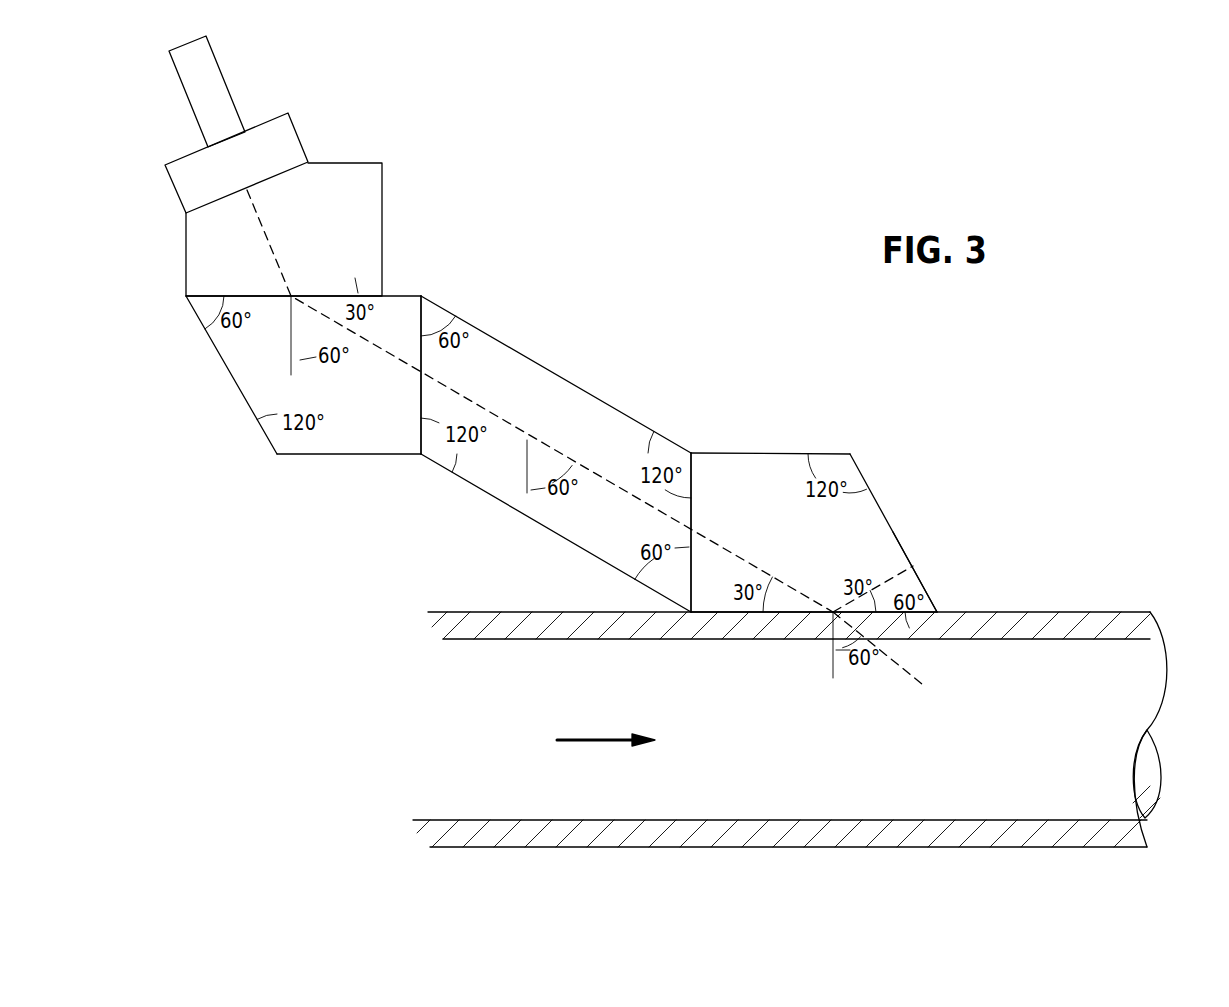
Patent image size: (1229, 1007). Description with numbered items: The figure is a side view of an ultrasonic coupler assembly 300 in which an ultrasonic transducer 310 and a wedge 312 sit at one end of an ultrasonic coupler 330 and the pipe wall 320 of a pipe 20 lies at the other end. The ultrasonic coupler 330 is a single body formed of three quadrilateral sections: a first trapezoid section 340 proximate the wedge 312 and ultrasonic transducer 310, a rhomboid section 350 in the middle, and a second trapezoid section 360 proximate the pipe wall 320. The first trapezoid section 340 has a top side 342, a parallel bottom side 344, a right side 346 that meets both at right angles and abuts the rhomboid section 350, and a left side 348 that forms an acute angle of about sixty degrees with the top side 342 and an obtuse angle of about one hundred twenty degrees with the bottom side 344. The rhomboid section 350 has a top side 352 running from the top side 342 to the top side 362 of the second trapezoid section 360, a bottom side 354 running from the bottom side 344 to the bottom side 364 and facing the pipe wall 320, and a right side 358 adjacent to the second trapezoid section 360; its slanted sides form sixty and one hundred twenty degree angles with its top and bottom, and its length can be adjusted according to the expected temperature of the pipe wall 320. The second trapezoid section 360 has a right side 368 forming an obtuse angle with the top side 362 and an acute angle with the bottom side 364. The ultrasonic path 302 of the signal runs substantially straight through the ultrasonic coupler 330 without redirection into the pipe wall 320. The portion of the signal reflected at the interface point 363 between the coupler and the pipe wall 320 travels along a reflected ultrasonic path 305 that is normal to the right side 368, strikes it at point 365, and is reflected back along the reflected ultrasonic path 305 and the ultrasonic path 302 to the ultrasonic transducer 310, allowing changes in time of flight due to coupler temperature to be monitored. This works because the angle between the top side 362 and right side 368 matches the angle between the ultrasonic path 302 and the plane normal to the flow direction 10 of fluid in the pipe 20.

The ultrasonic coupler assembly 300 is at (606, 180).
The ultrasonic transducer 310 is at (232, 97).
The wedge 312 is at (382, 198).
The ultrasonic path 302 is at (520, 427).
The reflected ultrasonic path 305 is at (893, 573).
The interface point 363 is at (832, 613).
The ultrasonic coupler 330 is at (571, 481).
The first trapezoid section 340 is at (356, 410).
The top side of first trapezoid section 342 is at (267, 297).
The bottom side of first trapezoid section 344 is at (365, 456).
The right side of first trapezoid section 346 is at (423, 355).
The left side of first trapezoid section 348 is at (250, 407).
The rhomboid section 350 is at (614, 446).
The top side of rhomboid section 352 is at (488, 333).
The bottom side of rhomboid section 354 is at (492, 495).
The right side of rhomboid section 358 is at (693, 508).
The second trapezoid section 360 is at (826, 535).
The top side of second trapezoid section 362 is at (780, 454).
The bottom side of second trapezoid section 364 is at (730, 613).
The point on right side 365 is at (913, 562).
The right side of second trapezoid section 368 is at (883, 512).
The pipe wall 320 is at (1077, 627).
The pipe 20 is at (810, 707).
The flow direction 10 is at (606, 729).